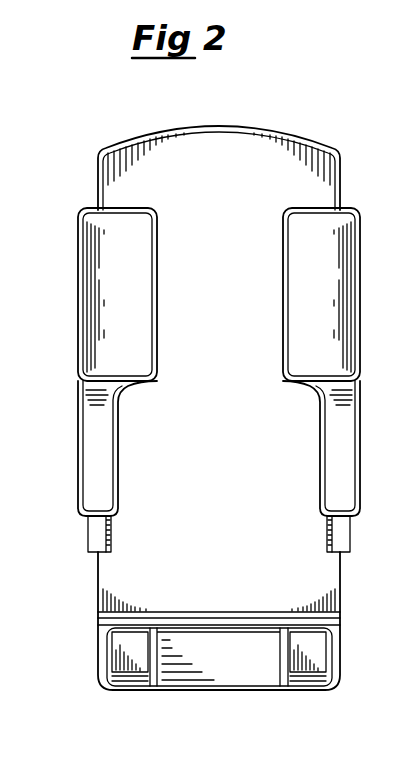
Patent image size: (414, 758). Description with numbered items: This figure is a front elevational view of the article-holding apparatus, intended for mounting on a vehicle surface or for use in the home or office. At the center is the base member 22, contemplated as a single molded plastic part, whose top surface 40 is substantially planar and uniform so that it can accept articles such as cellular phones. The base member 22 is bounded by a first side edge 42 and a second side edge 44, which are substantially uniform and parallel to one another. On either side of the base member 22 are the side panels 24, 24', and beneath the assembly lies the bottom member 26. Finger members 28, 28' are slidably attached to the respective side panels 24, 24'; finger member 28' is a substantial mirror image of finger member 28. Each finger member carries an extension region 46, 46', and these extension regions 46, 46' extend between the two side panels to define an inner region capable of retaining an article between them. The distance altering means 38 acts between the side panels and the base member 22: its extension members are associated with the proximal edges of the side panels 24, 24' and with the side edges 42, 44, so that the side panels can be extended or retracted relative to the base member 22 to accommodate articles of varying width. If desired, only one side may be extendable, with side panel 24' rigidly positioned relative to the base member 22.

The base member 22 is at (207, 219).
The top surface 40 is at (240, 502).
The extension region 46 is at (122, 253).
The extension region 46' is at (310, 306).
The finger member 28 is at (92, 294).
The finger member 28' is at (348, 294).
The side panel 24 is at (92, 466).
The side panel 24' is at (348, 468).
The means for altering the distance between the side panels 38 is at (84, 548).
The first side edge 42 is at (98, 598).
The second side edge 44 is at (340, 593).
The bottom member 26 is at (318, 650).